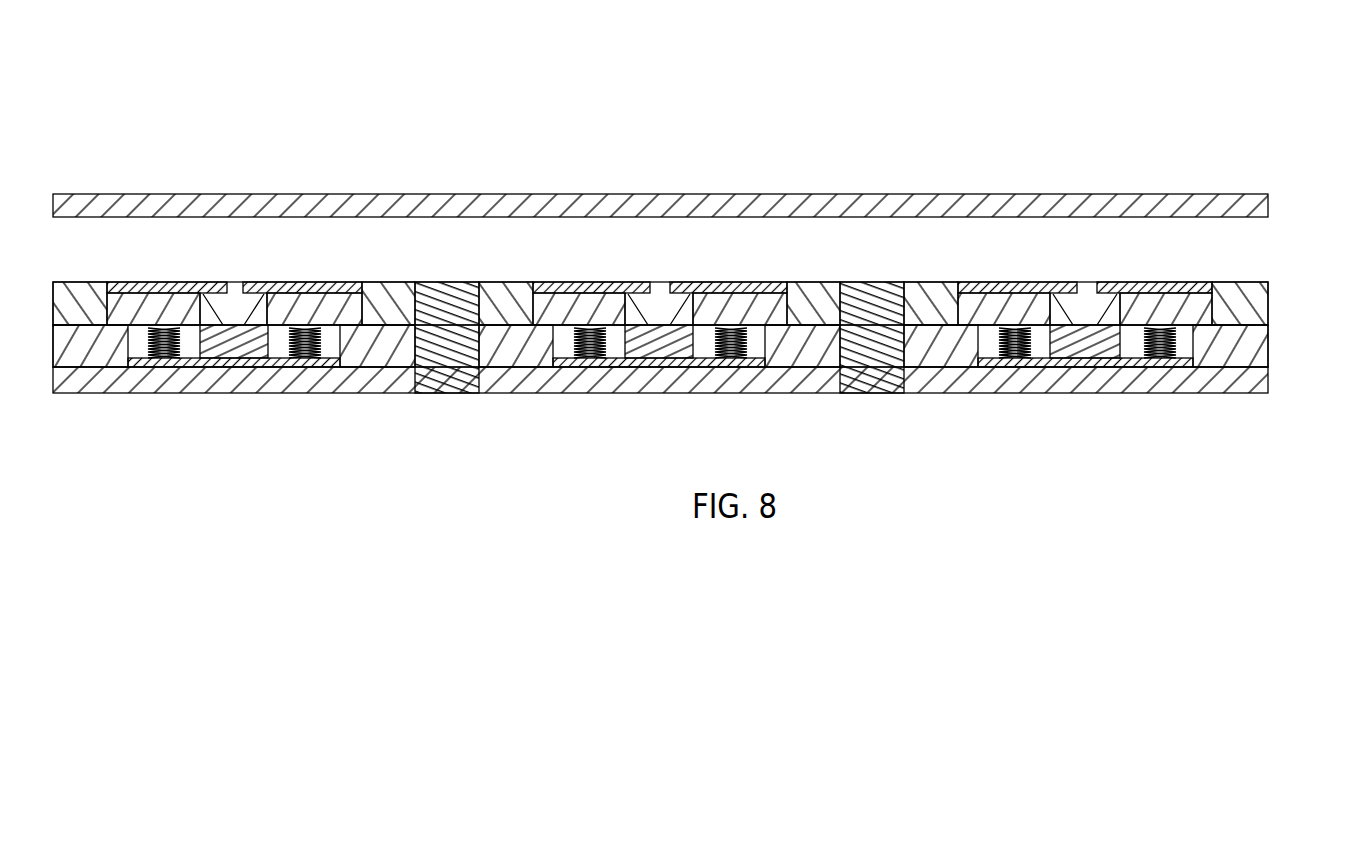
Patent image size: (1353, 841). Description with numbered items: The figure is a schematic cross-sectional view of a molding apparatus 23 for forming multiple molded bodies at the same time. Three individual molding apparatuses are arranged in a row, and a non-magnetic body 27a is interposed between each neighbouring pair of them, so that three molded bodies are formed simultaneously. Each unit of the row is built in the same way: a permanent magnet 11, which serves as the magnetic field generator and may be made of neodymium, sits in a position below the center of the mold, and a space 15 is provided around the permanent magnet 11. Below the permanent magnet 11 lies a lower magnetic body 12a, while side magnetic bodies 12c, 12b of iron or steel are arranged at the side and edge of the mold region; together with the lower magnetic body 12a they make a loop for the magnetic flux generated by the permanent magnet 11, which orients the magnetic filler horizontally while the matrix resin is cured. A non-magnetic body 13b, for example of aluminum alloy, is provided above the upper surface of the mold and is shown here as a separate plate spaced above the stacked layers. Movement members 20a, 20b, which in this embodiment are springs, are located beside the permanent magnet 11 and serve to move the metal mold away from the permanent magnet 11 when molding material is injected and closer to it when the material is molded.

The molding apparatus 23 is at (141, 125).
The non-magnetic body 13b is at (1262, 202).
The side magnetic body 12c is at (1242, 302).
The side magnetic body 12b is at (698, 387).
The lower magnetic body 12a is at (1247, 378).
The non-magnetic body 27a is at (877, 375).
The space 15 is at (967, 369).
The movement member 20a is at (1010, 360).
The permanent magnet 11 is at (1090, 362).
The movement member 20b is at (1157, 370).